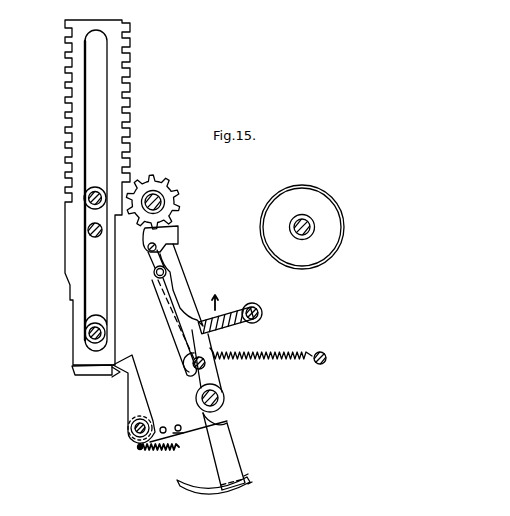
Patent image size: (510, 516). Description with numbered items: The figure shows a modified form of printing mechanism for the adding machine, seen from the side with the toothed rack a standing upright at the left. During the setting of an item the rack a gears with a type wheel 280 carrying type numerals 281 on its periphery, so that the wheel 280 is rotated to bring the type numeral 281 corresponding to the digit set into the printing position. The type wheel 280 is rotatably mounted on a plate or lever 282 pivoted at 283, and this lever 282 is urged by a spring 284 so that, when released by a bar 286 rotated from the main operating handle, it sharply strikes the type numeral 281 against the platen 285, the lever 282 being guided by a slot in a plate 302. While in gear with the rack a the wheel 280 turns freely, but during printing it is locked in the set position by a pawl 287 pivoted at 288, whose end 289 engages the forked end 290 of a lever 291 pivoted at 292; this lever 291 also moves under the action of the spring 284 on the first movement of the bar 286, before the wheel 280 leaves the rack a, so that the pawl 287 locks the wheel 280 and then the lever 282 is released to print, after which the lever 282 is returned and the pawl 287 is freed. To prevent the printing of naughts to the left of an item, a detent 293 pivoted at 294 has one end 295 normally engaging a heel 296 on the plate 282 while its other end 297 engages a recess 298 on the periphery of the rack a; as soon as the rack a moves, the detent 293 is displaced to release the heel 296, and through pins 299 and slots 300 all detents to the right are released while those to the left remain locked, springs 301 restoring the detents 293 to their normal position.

The rack bar a is at (117, 112).
The type wheel 280 is at (152, 176).
The type numerals 281 is at (178, 188).
The plate or lever 282 is at (183, 274).
The pivot 283 is at (218, 398).
The spring 284 is at (296, 356).
The platen 285 is at (302, 252).
The bar 286 is at (228, 314).
The pawl 287 is at (179, 240).
The pivot 288 is at (148, 247).
The end of pawl 289 is at (154, 272).
The forked end 290 is at (158, 282).
The lever 291 is at (176, 333).
The pivot 292 is at (196, 367).
The detent 293 is at (128, 406).
The pivot 294 is at (133, 432).
The end of detent 295 is at (199, 434).
The heel 296 is at (222, 428).
The end of detent 297 is at (117, 380).
The recess 298 is at (73, 367).
The pins 299 is at (165, 451).
The slots 300 is at (178, 425).
The springs 301 is at (146, 449).
The plate 302 is at (253, 478).